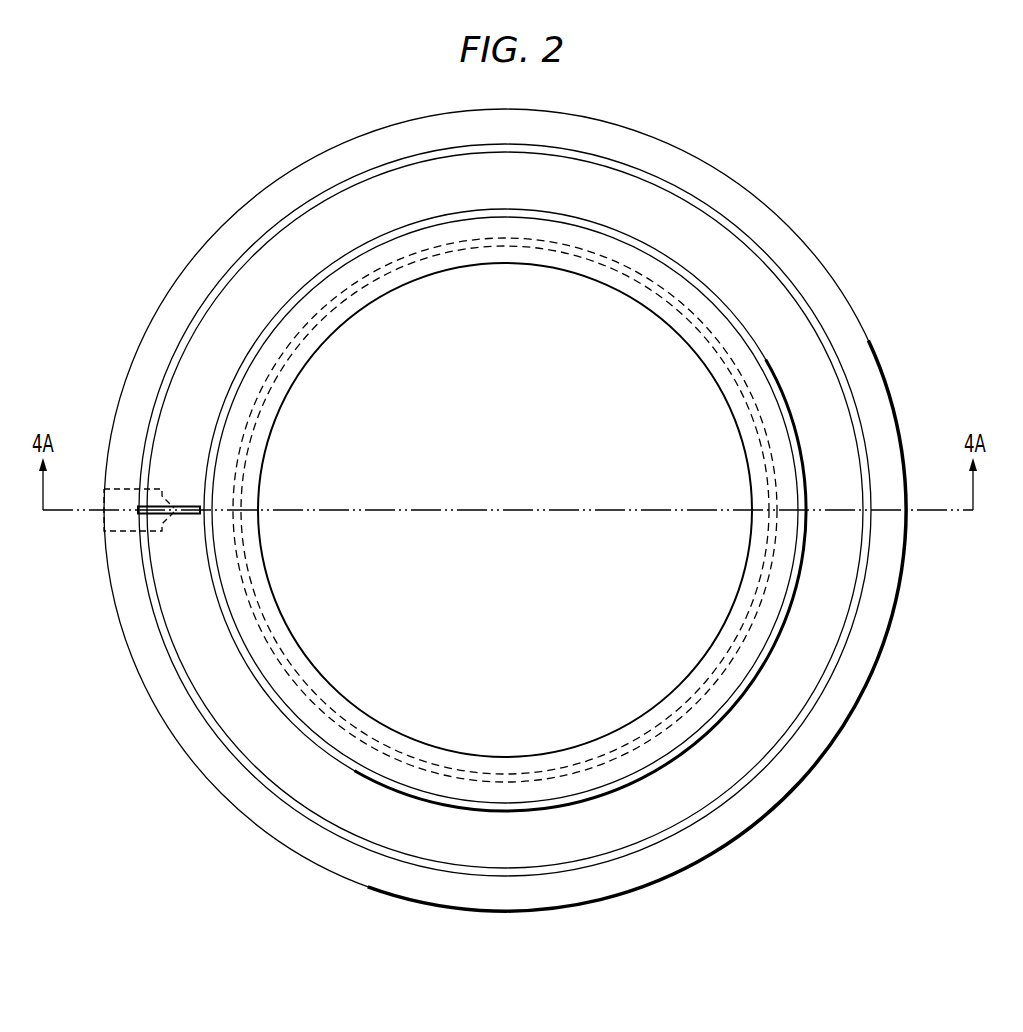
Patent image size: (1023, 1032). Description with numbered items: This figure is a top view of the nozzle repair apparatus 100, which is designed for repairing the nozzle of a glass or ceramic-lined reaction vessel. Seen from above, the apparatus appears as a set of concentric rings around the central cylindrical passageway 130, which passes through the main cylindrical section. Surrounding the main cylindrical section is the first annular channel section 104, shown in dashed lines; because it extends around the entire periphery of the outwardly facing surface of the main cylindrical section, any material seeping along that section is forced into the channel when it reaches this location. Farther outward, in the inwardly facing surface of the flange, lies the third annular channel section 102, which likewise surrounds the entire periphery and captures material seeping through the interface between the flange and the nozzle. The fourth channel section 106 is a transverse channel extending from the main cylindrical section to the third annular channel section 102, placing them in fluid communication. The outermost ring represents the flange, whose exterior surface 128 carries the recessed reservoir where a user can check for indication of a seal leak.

The nozzle repair apparatus 100 is at (890, 140).
The third annular channel section 102 is at (820, 330).
The first annular channel section 104 is at (777, 438).
The fourth channel section 106 is at (190, 507).
The exterior surface 128 is at (870, 683).
The cylindrical passageway 130 is at (552, 308).